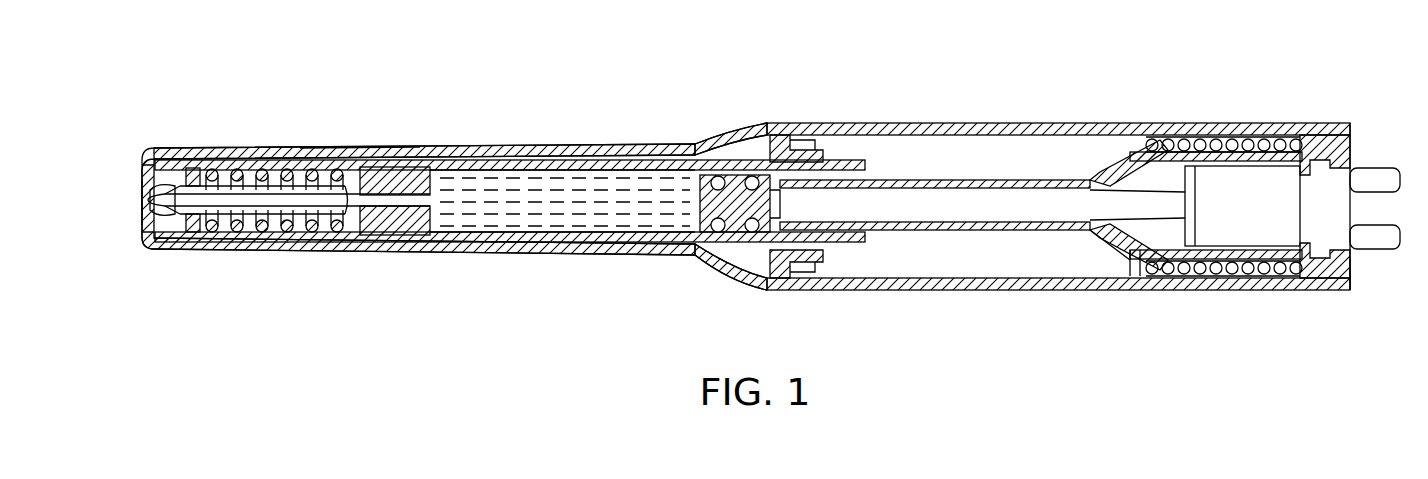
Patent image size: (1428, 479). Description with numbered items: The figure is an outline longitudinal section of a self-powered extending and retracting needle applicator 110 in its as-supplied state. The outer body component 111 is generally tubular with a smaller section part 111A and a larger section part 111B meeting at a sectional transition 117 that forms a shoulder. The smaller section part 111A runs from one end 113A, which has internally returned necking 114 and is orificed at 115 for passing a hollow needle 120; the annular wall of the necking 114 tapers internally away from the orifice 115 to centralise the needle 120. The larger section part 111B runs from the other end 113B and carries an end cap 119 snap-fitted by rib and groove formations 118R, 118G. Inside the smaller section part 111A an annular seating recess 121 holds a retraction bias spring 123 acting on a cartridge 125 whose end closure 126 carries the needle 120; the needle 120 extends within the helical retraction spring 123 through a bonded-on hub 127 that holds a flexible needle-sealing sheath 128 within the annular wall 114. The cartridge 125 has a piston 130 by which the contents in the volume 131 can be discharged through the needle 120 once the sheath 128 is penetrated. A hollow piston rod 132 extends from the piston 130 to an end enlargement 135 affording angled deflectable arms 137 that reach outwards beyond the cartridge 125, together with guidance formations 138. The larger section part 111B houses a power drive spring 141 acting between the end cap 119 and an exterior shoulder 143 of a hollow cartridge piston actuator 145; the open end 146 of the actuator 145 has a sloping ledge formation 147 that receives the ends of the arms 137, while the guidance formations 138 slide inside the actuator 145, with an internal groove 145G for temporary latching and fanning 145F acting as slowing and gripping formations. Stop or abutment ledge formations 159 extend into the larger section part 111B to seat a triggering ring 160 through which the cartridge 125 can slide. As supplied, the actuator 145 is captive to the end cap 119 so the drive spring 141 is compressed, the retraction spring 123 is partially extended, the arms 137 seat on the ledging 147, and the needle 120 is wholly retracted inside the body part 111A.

The self-powered applicator 110 is at (567, 142).
The outer body component 111 is at (748, 128).
The smaller section body part 111A is at (334, 148).
The larger section body part 111B is at (1150, 128).
The end of smaller section body part 113A is at (137, 250).
The end of larger section body part 113B is at (1350, 285).
The internally returned necking 114 is at (195, 166).
The orifice 115 is at (153, 200).
The sectional transition 117 is at (703, 243).
The rib formation 118R is at (1320, 150).
The groove formation 118G is at (1305, 292).
The end cap 119 is at (1350, 148).
The hollow needle 120 is at (279, 168).
The annular seating recess 121 is at (146, 160).
The retraction bias spring 123 is at (293, 236).
The cartridge 125 is at (455, 245).
The end closure 126 is at (406, 166).
The bonded-on hub 127 is at (340, 236).
The needle-sealing sheath 128 is at (240, 212).
The piston 130 is at (690, 180).
The volume of cartridge contents 131 is at (545, 222).
The piston rod 132 is at (885, 178).
The end enlargement 135 is at (1110, 266).
The angled deflectable arms 137 is at (1125, 170).
The guidance formations 138 is at (1178, 190).
The power drive spring 141 is at (1240, 139).
The exterior shoulder 143 is at (1178, 150).
The cartridge piston actuator 145 is at (1200, 288).
The fanning 145F is at (1165, 242).
The internal groove 145G is at (1160, 277).
The open end 146 is at (1120, 200).
The sloping ledge formation 147 is at (1135, 268).
The stop or abutment ledge formations 159 is at (757, 140).
The triggering ring 160 is at (808, 148).